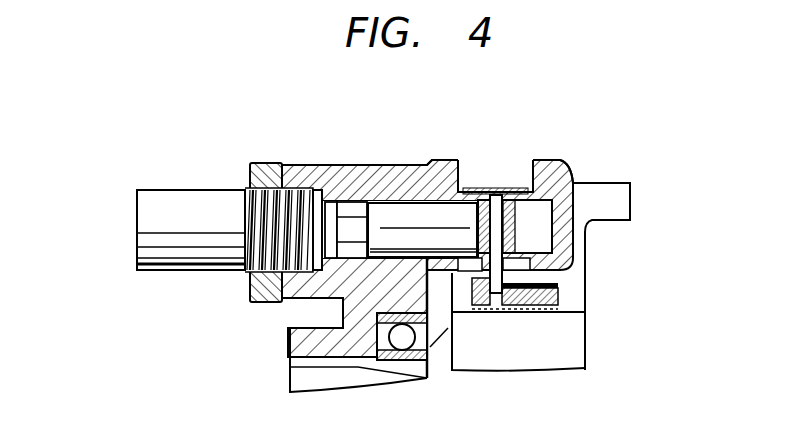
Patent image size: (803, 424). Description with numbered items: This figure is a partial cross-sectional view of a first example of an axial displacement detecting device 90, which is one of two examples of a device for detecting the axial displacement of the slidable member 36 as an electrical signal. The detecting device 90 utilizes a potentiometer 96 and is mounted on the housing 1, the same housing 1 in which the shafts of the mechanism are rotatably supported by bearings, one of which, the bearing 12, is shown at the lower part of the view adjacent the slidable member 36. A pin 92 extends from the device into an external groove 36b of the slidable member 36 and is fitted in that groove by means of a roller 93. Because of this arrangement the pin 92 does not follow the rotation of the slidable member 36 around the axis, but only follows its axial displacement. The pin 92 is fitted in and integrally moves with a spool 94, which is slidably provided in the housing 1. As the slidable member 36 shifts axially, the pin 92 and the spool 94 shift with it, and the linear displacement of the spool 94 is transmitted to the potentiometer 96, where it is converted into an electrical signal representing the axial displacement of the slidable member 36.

The housing 1 is at (455, 236).
The detecting device 90 is at (331, 158).
The potentiometer 96 is at (207, 204).
The spool 94 is at (395, 216).
The pin 92 is at (497, 190).
The roller 93 is at (527, 283).
The slidable member 36 is at (521, 313).
The external groove 36b is at (478, 313).
The bearing 12 is at (410, 360).